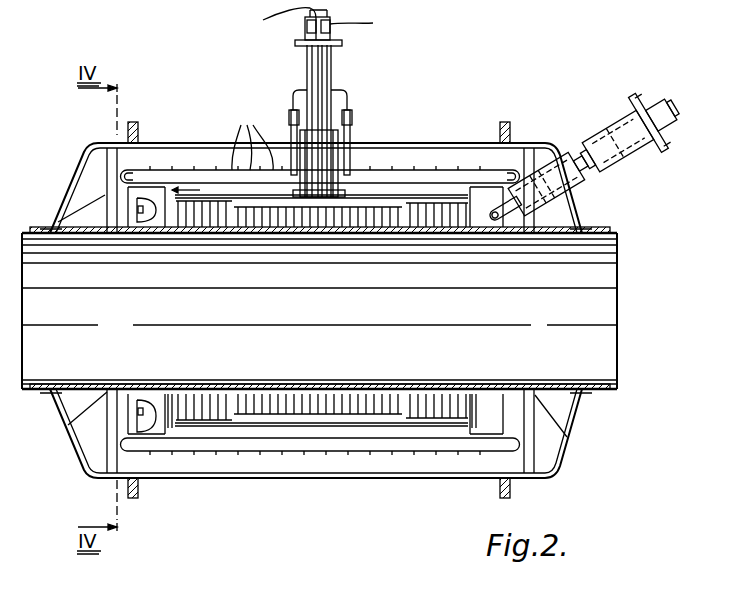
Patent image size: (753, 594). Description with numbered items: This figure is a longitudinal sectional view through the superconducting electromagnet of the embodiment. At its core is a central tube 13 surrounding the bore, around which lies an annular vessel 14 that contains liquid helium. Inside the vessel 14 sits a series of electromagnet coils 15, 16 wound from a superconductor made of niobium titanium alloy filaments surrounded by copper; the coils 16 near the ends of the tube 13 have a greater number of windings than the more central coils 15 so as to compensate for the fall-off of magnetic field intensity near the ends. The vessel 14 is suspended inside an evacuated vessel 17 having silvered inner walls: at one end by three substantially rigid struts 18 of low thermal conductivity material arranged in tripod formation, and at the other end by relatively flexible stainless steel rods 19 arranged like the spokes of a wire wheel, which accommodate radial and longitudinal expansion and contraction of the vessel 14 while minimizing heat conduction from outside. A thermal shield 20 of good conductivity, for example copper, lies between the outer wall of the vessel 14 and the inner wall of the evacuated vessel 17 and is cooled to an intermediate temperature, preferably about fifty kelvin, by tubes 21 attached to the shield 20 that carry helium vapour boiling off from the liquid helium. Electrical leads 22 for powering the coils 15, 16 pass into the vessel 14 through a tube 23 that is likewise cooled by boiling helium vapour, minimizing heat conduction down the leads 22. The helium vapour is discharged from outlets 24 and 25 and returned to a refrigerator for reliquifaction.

The central tube 13 is at (605, 238).
The annular vessel 14 is at (388, 438).
The electromagnet coils 15 is at (305, 405).
The electromagnet coils 16 is at (190, 412).
The evacuated vessel 17 is at (500, 465).
The struts 18 is at (660, 128).
The stainless steel rods 19 is at (133, 413).
The thermal shield 20 is at (222, 168).
The tubes 21 is at (252, 134).
The electrical leads 22 is at (274, 24).
The tube 23 is at (335, 65).
The outlet 24 is at (367, 24).
The outlet 25 is at (347, 93).